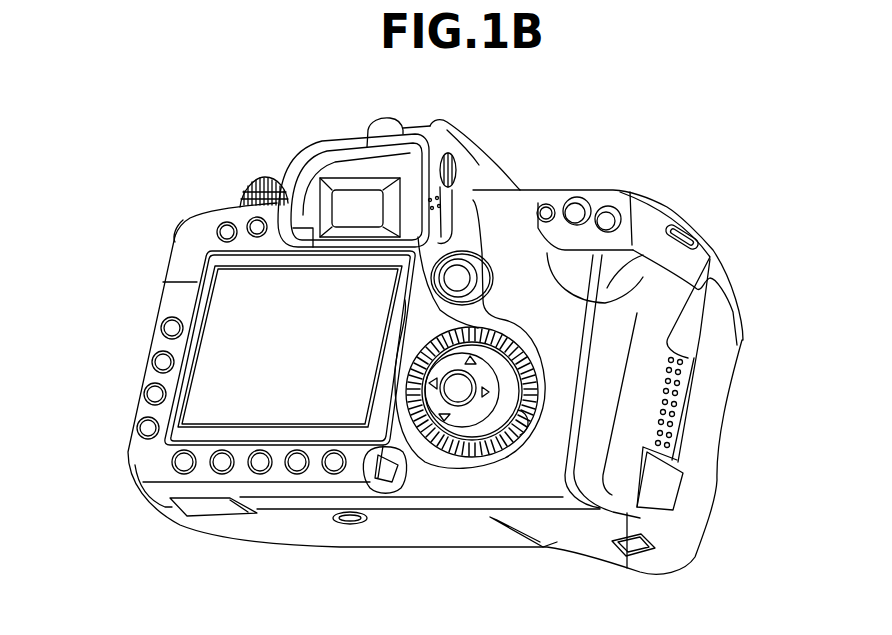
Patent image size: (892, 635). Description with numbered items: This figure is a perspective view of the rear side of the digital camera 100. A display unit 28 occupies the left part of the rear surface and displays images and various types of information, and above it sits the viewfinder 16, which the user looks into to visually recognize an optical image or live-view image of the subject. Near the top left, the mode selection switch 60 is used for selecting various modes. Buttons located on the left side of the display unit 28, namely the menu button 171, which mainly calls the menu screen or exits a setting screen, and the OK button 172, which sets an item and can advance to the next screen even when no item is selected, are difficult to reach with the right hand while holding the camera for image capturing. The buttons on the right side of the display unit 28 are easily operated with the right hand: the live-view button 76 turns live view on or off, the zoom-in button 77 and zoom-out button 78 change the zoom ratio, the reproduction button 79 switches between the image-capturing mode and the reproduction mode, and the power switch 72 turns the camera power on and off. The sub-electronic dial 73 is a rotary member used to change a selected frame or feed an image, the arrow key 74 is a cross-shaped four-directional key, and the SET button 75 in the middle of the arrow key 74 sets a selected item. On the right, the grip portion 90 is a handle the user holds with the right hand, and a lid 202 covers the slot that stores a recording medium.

The digital camera 100 is at (730, 180).
The viewfinder 16 is at (360, 213).
The mode selection switch 60 is at (253, 180).
The menu button 171 is at (227, 230).
The display unit 28 is at (222, 302).
The OK button 172 is at (151, 397).
The reproduction button 79 is at (337, 464).
The power switch 72 is at (396, 482).
The sub-electronic dial 73 is at (459, 397).
The arrow key 74 is at (466, 432).
The SET button 75 is at (496, 445).
The live-view (LV) button 76 is at (452, 268).
The zoom-out button 78 is at (577, 210).
The zoom-in button 77 is at (607, 217).
The grip portion 90 is at (700, 474).
The lid 202 is at (643, 355).